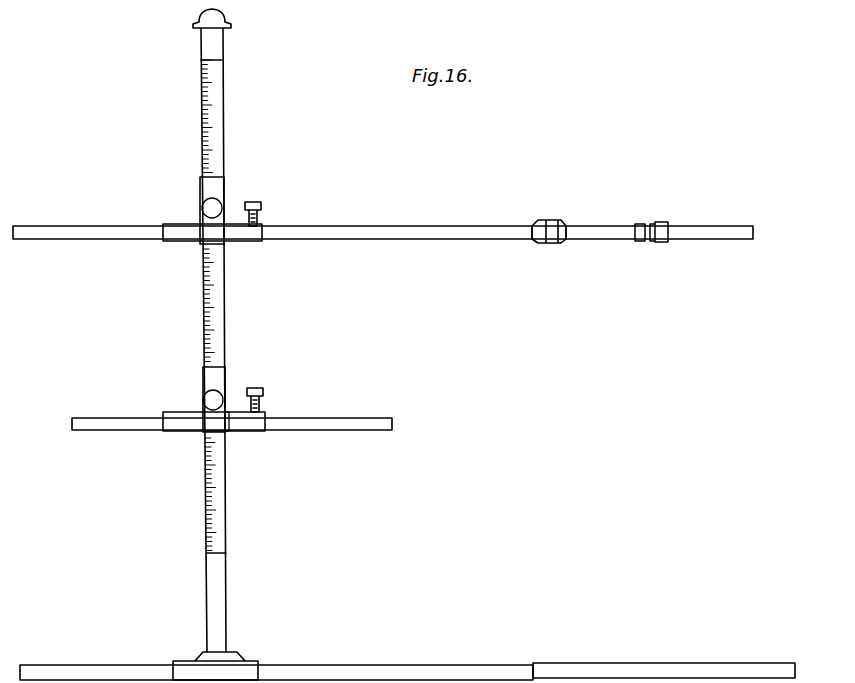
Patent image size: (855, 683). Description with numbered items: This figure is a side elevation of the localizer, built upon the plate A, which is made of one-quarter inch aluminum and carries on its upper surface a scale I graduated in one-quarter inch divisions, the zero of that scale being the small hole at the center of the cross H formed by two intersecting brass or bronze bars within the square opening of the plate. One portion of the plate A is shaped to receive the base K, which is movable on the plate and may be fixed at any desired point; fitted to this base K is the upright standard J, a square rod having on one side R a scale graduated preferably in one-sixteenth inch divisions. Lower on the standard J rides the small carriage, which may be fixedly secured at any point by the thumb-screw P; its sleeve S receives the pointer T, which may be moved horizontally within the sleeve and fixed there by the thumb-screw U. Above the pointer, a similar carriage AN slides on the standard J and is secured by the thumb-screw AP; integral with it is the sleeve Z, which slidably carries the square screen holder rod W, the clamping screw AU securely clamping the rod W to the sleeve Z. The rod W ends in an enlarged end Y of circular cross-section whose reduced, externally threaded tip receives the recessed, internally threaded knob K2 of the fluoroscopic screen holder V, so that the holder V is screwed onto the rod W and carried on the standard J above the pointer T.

The upright standard J is at (222, 44).
The side of the standard R is at (222, 100).
The upper slider AN is at (216, 186).
The thumb-screw AP is at (204, 208).
The clamping screw AU is at (255, 202).
The screen holder rod W is at (98, 239).
The sleeve Z is at (180, 241).
The enlarged end of the rod Y is at (548, 220).
The knob K2 is at (560, 222).
The fluoroscopic screen holder V is at (698, 232).
The pointer T is at (306, 420).
The thumb-screw P is at (196, 424).
The sleeve S is at (207, 406).
The thumb-screw U is at (258, 388).
The cross H is at (229, 431).
The scale I is at (114, 665).
The base K is at (258, 664).
The plate A is at (655, 662).